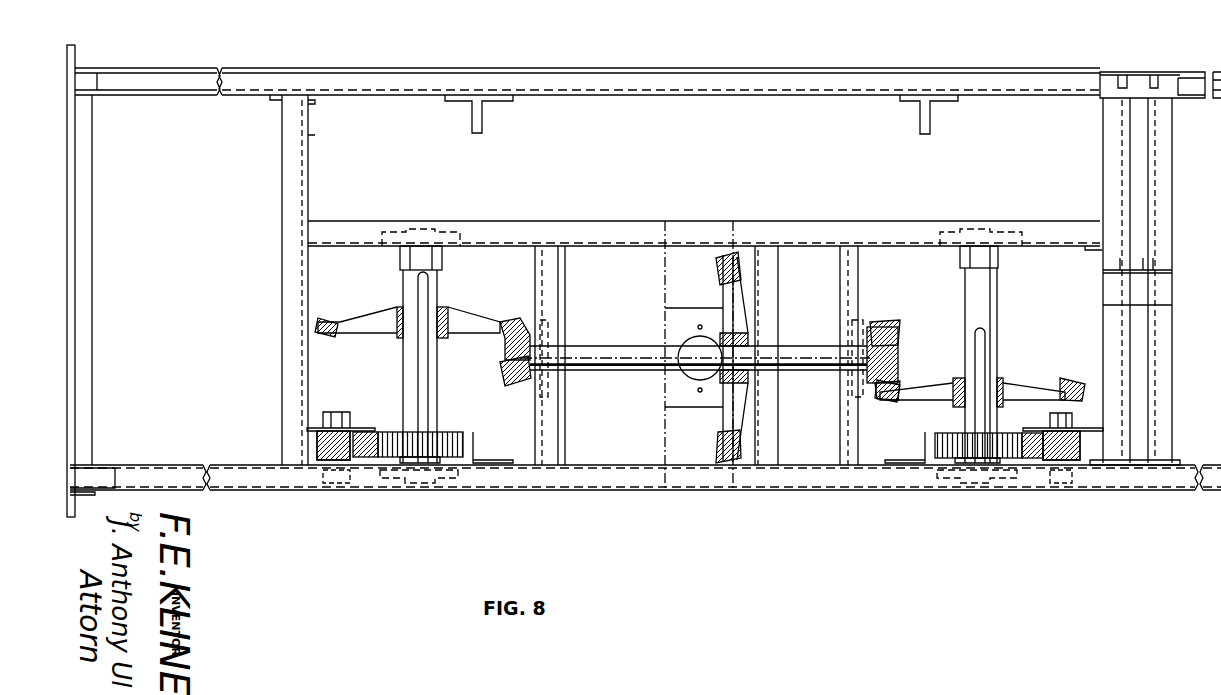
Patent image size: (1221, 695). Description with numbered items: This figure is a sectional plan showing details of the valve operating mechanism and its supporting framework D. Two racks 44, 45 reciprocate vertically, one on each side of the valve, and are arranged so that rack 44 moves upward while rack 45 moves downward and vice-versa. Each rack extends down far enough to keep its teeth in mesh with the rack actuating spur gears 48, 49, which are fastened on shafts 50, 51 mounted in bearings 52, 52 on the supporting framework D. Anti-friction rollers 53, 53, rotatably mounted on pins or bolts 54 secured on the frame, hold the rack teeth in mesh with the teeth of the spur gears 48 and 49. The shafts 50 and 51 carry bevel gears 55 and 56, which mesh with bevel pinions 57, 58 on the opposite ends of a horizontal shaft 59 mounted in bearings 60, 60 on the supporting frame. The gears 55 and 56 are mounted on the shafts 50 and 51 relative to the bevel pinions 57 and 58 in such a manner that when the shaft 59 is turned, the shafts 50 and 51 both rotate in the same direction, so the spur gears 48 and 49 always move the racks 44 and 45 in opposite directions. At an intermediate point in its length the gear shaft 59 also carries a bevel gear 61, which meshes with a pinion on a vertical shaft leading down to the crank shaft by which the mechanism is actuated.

The supporting framework D is at (610, 482).
The rack 44 is at (370, 452).
The rack 45 is at (1050, 459).
The spur gear 48 is at (392, 432).
The spur gear 49 is at (1010, 458).
The shaft 50 is at (433, 399).
The shaft 51 is at (997, 306).
The bearing 52 is at (457, 236).
The anti-friction roller 53 is at (325, 446).
The pin or bolt 54 is at (334, 412).
The bevel gear 55 is at (477, 323).
The bevel gear 56 is at (918, 396).
The bevel pinion 57 is at (521, 387).
The bevel pinion 58 is at (889, 331).
The horizontal shaft 59 is at (632, 366).
The bearing 60 is at (548, 325).
The bevel gear 61 is at (724, 448).